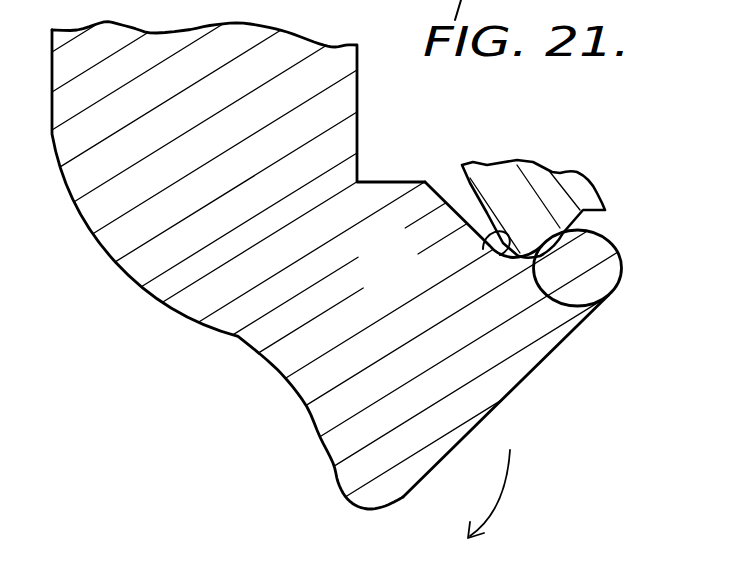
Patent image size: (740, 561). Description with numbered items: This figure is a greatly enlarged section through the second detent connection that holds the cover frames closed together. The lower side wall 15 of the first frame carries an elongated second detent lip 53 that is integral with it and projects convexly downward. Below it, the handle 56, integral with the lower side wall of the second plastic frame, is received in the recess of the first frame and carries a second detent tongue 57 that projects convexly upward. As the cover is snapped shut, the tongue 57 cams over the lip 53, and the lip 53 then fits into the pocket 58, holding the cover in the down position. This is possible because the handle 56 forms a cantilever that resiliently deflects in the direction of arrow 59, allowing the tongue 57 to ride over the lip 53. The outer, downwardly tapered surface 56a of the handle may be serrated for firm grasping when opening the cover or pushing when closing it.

The first frame lower side wall 15 is at (546, 173).
The second detent lip 53 is at (598, 302).
The handle 56 is at (186, 335).
The outer downwardly tapered surface of the handle 56a is at (320, 437).
The second detent tongue 57 is at (603, 247).
The pocket 58 is at (488, 233).
The arrow 59 is at (510, 473).